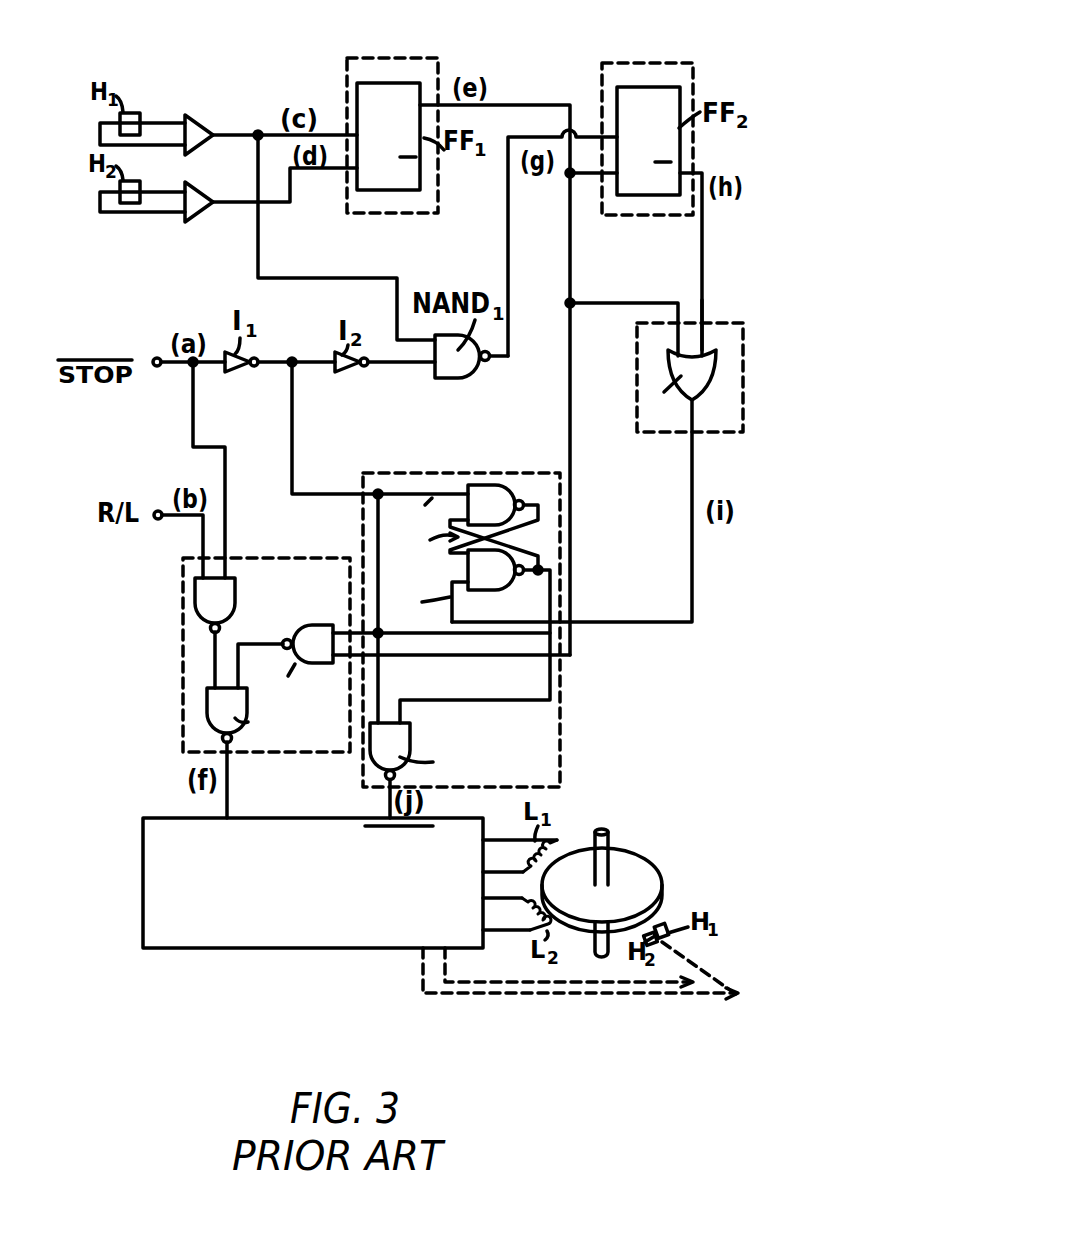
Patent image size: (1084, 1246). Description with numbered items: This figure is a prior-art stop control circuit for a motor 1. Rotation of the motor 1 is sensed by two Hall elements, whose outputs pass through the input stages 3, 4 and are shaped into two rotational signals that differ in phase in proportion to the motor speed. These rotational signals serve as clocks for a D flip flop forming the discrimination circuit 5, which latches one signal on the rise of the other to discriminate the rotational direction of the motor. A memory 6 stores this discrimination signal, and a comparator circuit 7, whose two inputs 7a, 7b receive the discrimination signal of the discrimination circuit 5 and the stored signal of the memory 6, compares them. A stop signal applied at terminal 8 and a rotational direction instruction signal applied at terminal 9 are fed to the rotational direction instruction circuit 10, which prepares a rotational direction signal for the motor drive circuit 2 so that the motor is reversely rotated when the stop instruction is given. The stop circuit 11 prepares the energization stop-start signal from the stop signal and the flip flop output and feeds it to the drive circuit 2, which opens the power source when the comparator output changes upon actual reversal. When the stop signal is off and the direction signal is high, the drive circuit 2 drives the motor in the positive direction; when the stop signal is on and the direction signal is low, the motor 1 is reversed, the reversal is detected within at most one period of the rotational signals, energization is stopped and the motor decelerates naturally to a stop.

The motor 1 is at (625, 865).
The motor drive circuit 2 is at (236, 950).
The energized signal 3 is at (198, 121).
The amplifier 4 is at (201, 192).
The discrimination circuit 5 is at (425, 58).
The memory 6 is at (625, 62).
The comparator circuit 7 is at (679, 359).
The OR gate first input 7a is at (678, 333).
The OR gate second input 7b is at (706, 330).
The STOP input terminal 8 is at (157, 357).
The R/L input terminal 9 is at (158, 510).
The rotational direction instruction circuit 10 is at (183, 662).
The stop circuit 11 is at (418, 470).